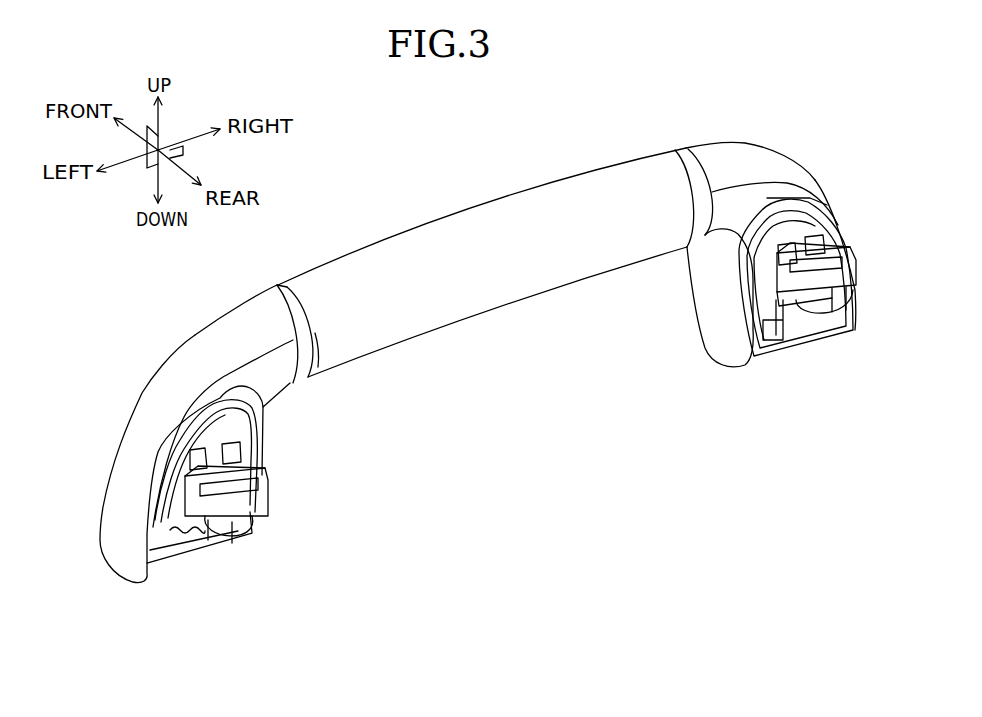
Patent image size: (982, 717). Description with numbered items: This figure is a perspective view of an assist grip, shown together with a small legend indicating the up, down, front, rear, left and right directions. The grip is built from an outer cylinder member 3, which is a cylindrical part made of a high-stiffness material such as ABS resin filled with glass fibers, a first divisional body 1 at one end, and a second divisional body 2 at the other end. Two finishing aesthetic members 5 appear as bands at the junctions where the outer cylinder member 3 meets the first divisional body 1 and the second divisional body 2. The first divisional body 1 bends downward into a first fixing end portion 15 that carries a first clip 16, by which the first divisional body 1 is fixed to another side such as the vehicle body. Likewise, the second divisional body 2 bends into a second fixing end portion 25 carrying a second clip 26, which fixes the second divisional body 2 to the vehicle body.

The first divisional body 1 is at (735, 155).
The second divisional body 2 is at (217, 338).
The outer cylinder member 3 is at (462, 225).
The finishing aesthetic member 5 is at (273, 298).
The first fixing end portion 15 is at (785, 162).
The first clip 16 is at (855, 258).
The second fixing end portion 25 is at (141, 394).
The second clip 26 is at (266, 477).